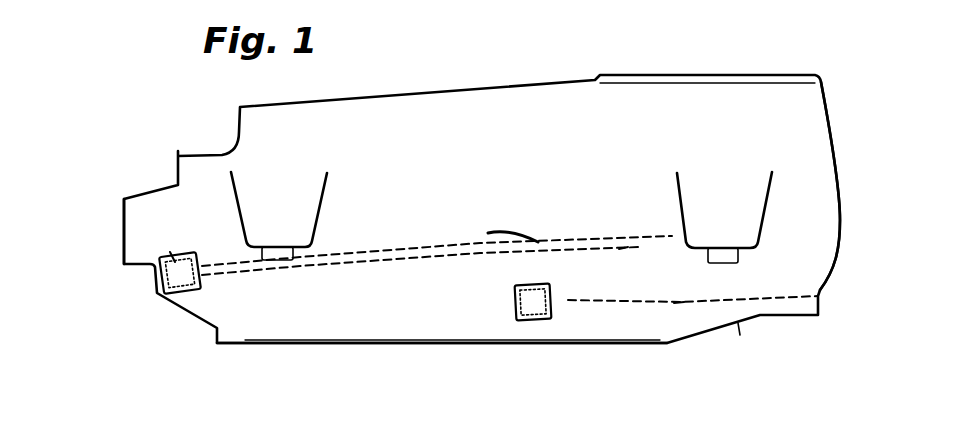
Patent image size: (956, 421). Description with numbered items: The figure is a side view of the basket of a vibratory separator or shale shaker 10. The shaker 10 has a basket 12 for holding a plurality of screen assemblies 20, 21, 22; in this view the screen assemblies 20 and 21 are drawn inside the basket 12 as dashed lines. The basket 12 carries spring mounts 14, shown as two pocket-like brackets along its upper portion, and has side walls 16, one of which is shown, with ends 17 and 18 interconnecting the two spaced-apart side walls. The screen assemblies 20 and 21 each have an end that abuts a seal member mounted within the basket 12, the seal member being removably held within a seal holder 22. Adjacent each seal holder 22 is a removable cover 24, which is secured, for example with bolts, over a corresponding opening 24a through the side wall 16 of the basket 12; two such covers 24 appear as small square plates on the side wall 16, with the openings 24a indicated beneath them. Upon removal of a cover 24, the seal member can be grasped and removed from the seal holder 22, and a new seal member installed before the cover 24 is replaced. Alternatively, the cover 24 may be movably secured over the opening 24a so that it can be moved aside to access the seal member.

The vibratory separator or shale shaker 10 is at (212, 140).
The basket 12 is at (453, 147).
The spring mounts 14 is at (273, 265).
The side wall 16 is at (428, 322).
The end 17 is at (118, 252).
The end 18 is at (827, 287).
The screen assembly 20 is at (623, 243).
The screen assembly 21 is at (679, 303).
The seal holder 22 is at (378, 260).
The removable cover 24 is at (187, 297).
The openings 24a is at (163, 243).